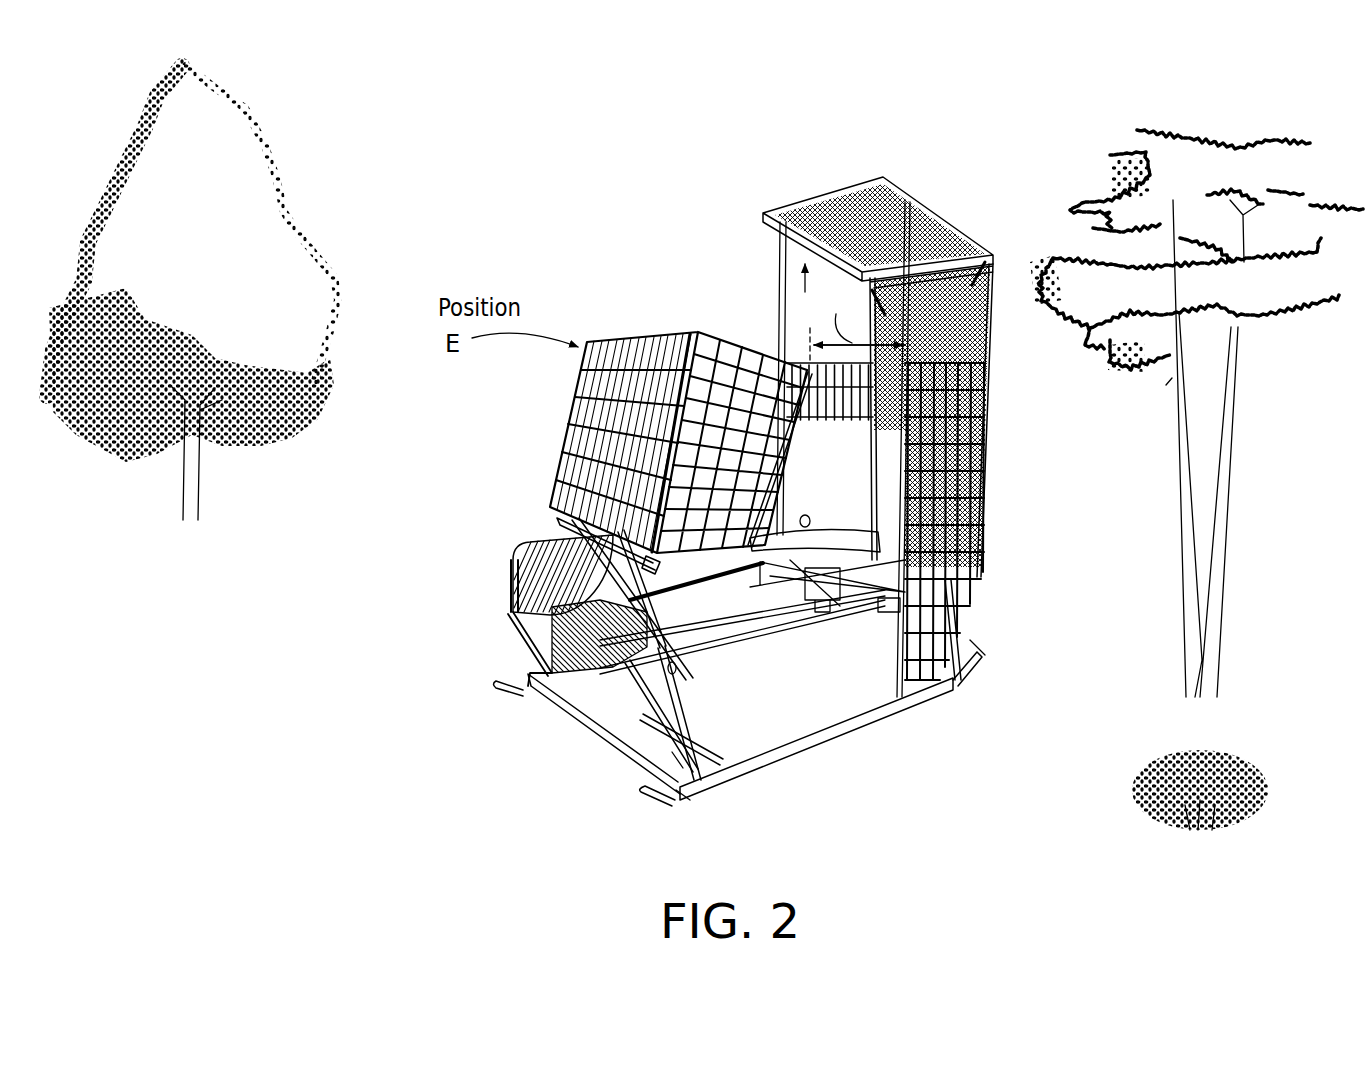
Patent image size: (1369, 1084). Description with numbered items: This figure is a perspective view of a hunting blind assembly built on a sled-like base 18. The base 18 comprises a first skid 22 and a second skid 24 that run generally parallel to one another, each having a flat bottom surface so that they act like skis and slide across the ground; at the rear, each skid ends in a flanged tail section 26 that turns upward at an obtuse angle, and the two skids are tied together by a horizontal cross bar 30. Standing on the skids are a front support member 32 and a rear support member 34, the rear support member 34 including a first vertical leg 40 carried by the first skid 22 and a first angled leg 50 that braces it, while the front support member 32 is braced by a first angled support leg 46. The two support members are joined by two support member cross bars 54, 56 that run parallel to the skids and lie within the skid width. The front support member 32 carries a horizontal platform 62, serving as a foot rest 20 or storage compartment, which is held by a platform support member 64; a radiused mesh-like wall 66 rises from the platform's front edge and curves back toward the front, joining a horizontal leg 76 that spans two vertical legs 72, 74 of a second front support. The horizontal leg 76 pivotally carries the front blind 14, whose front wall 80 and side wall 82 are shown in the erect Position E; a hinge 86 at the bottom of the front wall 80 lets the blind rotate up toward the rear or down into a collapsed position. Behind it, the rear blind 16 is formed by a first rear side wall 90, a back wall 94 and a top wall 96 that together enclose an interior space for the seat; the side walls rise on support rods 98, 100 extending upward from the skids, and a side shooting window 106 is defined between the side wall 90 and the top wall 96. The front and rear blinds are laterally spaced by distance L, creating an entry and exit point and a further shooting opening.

The front blind 14 is at (678, 393).
The rear blind 16 is at (888, 414).
The base 18 is at (784, 756).
The foot rest 20 is at (518, 603).
The first skid 22 is at (935, 705).
The second skid 24 is at (748, 650).
The flanged tail section 26 is at (980, 656).
The horizontal cross bar 30 is at (698, 745).
The front support member 32 is at (680, 797).
The rear support member 34 is at (680, 692).
The first vertical leg 40 is at (960, 680).
The first angled support leg 46 is at (672, 757).
The first angled leg 50 is at (885, 612).
The support member cross bar 54 is at (790, 618).
The support member cross bar 56 is at (737, 574).
The horizontal platform 62 is at (540, 660).
The platform support member 64 is at (590, 705).
The mesh-like wall 66 is at (548, 541).
The vertical leg 72 is at (620, 668).
The vertical leg 74 is at (640, 598).
The horizontal leg 76 is at (562, 522).
The front wall 80 is at (620, 340).
The side wall 82 is at (702, 336).
The hinge 86 is at (509, 580).
The first rear side wall 90 is at (990, 425).
The back wall 94 is at (976, 310).
The top wall 96 is at (828, 200).
The support rod 98 is at (908, 235).
The support rod 100 is at (779, 300).
The side shooting window 106 is at (800, 290).